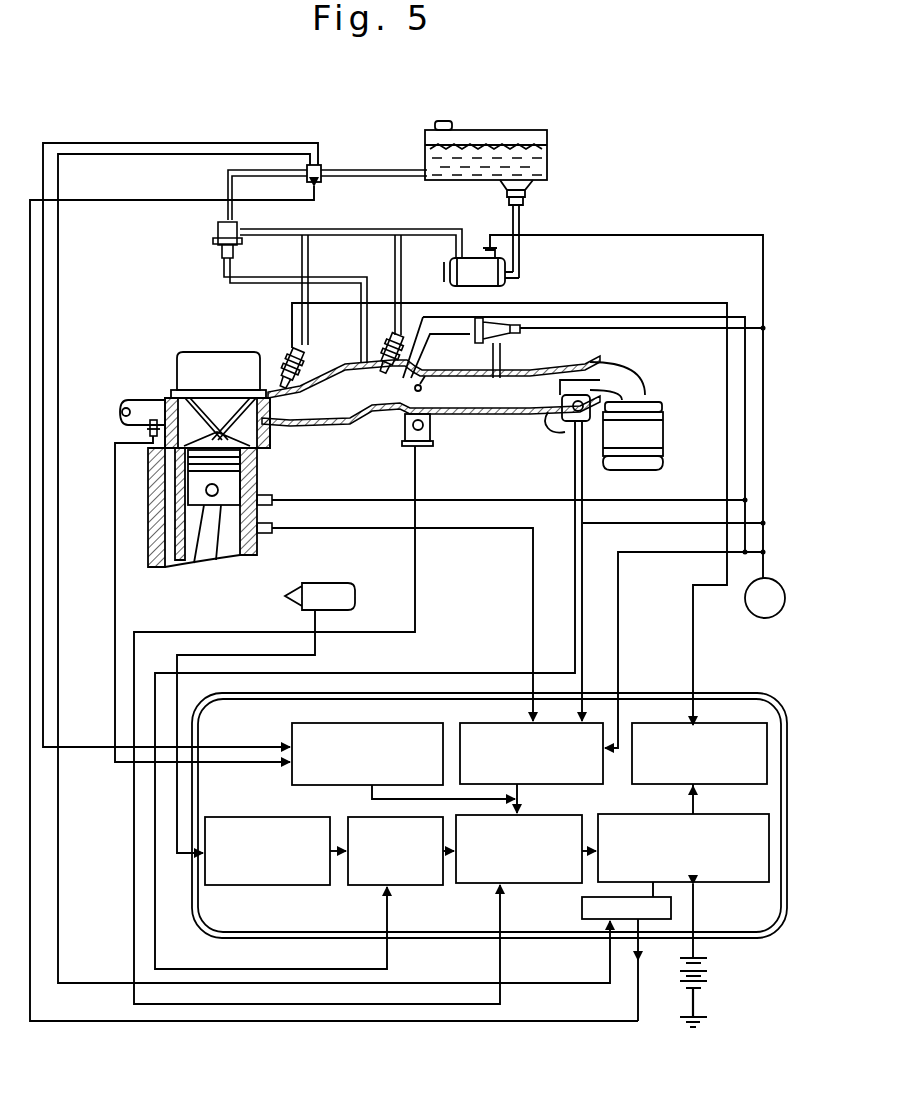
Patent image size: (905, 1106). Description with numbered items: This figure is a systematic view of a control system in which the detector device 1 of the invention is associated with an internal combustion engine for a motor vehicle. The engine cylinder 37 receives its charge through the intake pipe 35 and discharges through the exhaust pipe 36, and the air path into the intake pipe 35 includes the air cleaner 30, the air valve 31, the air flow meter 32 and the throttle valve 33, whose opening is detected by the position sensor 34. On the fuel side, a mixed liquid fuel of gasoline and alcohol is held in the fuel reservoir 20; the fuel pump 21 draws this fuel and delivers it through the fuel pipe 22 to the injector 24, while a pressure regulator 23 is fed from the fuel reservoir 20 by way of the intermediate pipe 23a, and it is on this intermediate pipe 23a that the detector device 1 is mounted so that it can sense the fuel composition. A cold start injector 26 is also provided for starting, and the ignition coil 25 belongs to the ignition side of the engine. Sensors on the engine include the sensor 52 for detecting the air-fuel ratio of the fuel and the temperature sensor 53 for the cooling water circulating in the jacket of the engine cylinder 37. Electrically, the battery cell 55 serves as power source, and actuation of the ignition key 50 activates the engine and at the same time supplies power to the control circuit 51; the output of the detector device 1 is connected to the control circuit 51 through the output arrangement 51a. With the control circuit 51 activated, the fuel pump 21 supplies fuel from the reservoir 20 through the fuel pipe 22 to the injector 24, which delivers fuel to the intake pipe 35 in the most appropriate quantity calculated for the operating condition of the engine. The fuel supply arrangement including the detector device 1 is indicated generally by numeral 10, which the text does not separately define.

The detector device 1 is at (326, 181).
The fuel supply system 10 is at (303, 183).
The fuel reservoir 20 is at (548, 140).
The fuel pump 21 is at (499, 278).
The fuel pipe 22 is at (377, 228).
The pressure regulator 23 is at (216, 230).
The intermediate pipe 23a is at (358, 168).
The injector 24 is at (283, 368).
The ignition coil 25 is at (302, 596).
The cold start injector 26 is at (382, 358).
The air cleaner 30 is at (654, 438).
The air valve 31 is at (500, 332).
The air flow meter 32 is at (560, 408).
The throttle valve 33 is at (422, 388).
The position sensor 34 is at (410, 432).
The intake pipe 35 is at (284, 426).
The exhaust pipe 36 is at (136, 402).
The engine cylinder 37 is at (152, 518).
The ignition key 50 is at (776, 592).
The control circuit 51 is at (730, 693).
The output arrangement 51a is at (671, 905).
The air-fuel ratio sensor 52 is at (148, 432).
The temperature sensor 53 is at (270, 532).
The battery cell 55 is at (703, 975).